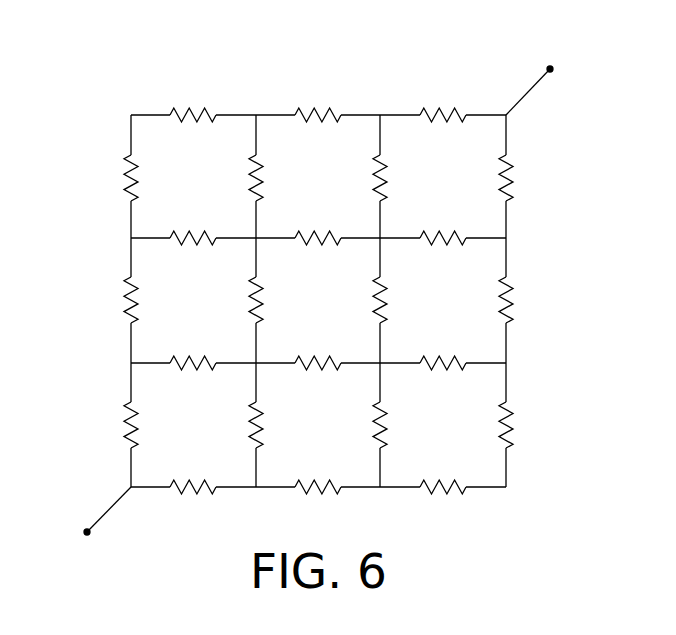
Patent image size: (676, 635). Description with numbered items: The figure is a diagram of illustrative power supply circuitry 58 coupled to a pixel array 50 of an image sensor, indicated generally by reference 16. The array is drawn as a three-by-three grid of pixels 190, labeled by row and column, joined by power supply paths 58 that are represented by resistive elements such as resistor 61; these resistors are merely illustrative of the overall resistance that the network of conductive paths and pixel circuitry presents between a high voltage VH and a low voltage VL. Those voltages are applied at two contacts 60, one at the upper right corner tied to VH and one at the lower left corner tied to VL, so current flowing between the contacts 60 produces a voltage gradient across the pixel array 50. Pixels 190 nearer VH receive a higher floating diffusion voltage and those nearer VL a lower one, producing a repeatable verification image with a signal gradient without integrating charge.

The pixel array circuit 16 is at (136, 36).
The pixel array 50 is at (528, 113).
The power supply circuitry 58 is at (367, 113).
The resistor 61 is at (440, 106).
The pixel 190 is at (160, 125).
The contact 60 is at (552, 72).